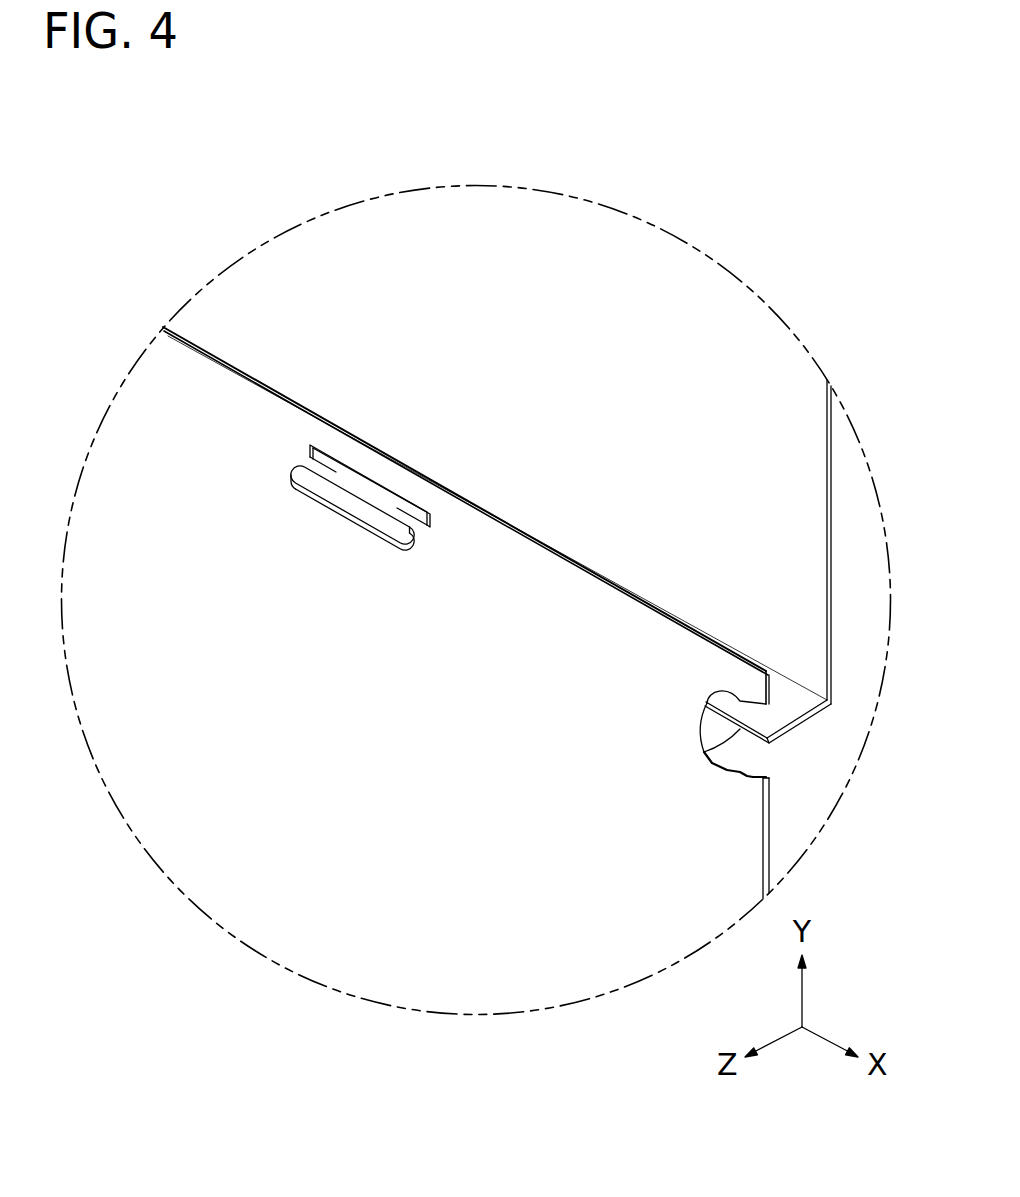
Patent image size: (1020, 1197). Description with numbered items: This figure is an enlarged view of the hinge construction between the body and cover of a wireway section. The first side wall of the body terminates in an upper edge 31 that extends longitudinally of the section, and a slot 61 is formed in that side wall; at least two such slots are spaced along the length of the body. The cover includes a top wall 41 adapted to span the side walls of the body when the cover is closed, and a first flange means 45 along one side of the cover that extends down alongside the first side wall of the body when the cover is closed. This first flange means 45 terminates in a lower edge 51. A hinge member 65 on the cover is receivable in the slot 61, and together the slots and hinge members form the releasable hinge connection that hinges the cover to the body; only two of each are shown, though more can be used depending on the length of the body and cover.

The upper edge 31 is at (238, 367).
The top wall 41 is at (832, 466).
The first flange means 45 is at (803, 726).
The lower edge 51 is at (704, 753).
The slot 61 is at (390, 479).
The hinge member 65 is at (336, 517).